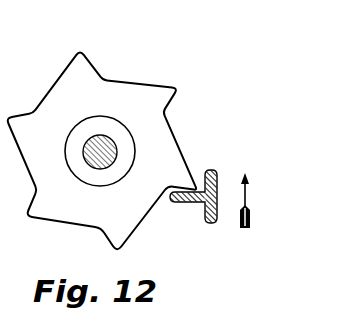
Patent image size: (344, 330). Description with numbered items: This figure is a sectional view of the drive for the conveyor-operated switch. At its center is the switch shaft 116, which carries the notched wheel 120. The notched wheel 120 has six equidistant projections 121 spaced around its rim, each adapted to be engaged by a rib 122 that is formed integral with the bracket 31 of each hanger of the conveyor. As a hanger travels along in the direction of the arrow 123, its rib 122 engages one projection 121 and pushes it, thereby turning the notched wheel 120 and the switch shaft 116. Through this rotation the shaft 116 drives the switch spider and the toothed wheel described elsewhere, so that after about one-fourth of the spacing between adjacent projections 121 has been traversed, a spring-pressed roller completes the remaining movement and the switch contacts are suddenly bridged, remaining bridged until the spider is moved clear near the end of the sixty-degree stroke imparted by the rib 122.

The notched wheel 120 is at (140, 108).
The switch shaft 116 is at (100, 152).
The projection 121 is at (180, 178).
The rib 122 is at (182, 201).
The bracket 31 is at (212, 224).
The arrow 123 is at (243, 198).